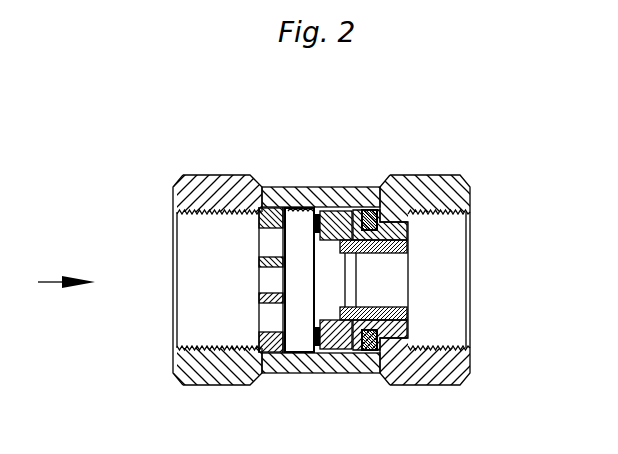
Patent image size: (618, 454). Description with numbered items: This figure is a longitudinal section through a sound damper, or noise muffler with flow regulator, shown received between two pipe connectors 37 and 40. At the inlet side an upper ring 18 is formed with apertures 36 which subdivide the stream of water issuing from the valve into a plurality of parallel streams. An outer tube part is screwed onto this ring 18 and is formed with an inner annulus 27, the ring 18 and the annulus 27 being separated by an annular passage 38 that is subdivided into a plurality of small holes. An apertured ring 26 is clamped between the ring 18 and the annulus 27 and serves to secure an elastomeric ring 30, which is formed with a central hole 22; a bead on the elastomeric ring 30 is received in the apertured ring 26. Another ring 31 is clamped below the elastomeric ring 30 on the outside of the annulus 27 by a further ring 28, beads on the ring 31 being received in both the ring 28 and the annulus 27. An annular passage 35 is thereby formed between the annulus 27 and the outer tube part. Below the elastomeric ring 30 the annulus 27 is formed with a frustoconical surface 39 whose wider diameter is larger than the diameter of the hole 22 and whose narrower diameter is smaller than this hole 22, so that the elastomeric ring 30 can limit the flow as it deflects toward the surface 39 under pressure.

The upper ring 18 is at (270, 203).
The central hole 22 is at (333, 270).
The apertured ring 26 is at (302, 205).
The inner annulus 27 is at (350, 224).
The ring 28 is at (395, 342).
The elastomeric ring 30 is at (328, 214).
The ring 31 is at (368, 206).
The annular passage 35 is at (386, 340).
The apertures 36 is at (265, 317).
The pipe connector 37 is at (205, 193).
The annular passage 38 is at (330, 352).
The frustoconical surface 39 is at (354, 342).
The pipe connector 40 is at (427, 182).